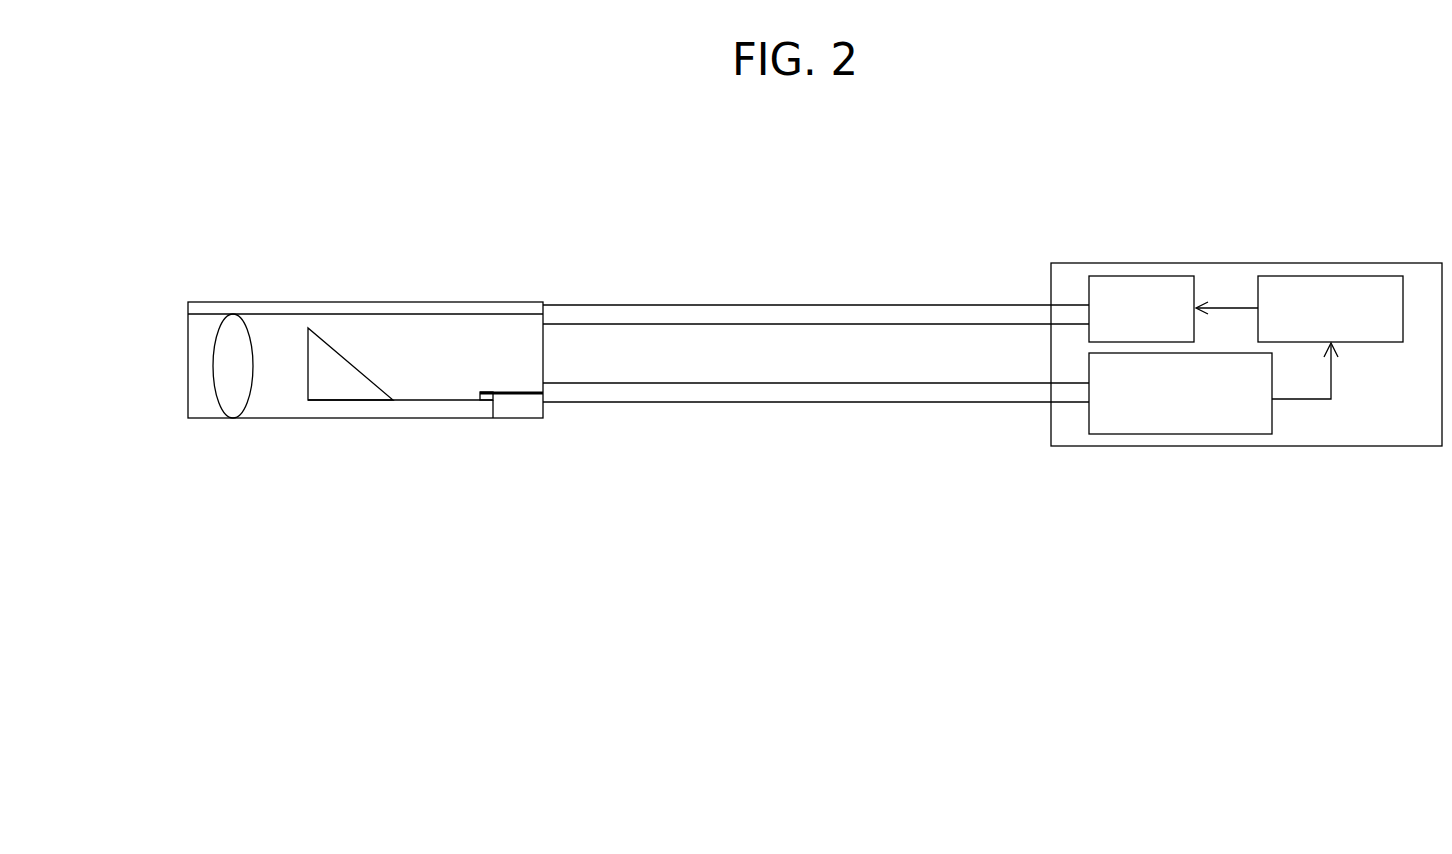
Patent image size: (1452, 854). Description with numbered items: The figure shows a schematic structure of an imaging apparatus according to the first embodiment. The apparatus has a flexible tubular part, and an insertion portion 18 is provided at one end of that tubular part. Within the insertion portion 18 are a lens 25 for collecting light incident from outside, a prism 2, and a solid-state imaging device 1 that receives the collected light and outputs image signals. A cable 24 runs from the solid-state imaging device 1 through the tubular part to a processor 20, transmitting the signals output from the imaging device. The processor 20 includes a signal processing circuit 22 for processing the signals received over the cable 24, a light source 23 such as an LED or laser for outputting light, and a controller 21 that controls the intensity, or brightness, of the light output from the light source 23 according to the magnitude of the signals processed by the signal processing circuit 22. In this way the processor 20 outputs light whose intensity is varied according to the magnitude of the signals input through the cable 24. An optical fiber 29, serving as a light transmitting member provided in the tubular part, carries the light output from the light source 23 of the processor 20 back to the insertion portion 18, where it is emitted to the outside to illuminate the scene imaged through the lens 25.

The insertion portion 18 is at (543, 263).
The lens 25 is at (213, 373).
The prism 2 is at (358, 367).
The solid-state imaging device 1 is at (415, 413).
The optical fiber 29 is at (660, 315).
The cable 24 is at (645, 397).
The processor 20 is at (1388, 263).
The light source 23 is at (1136, 276).
The controller 21 is at (1333, 276).
The signal processing circuit 22 is at (1127, 434).